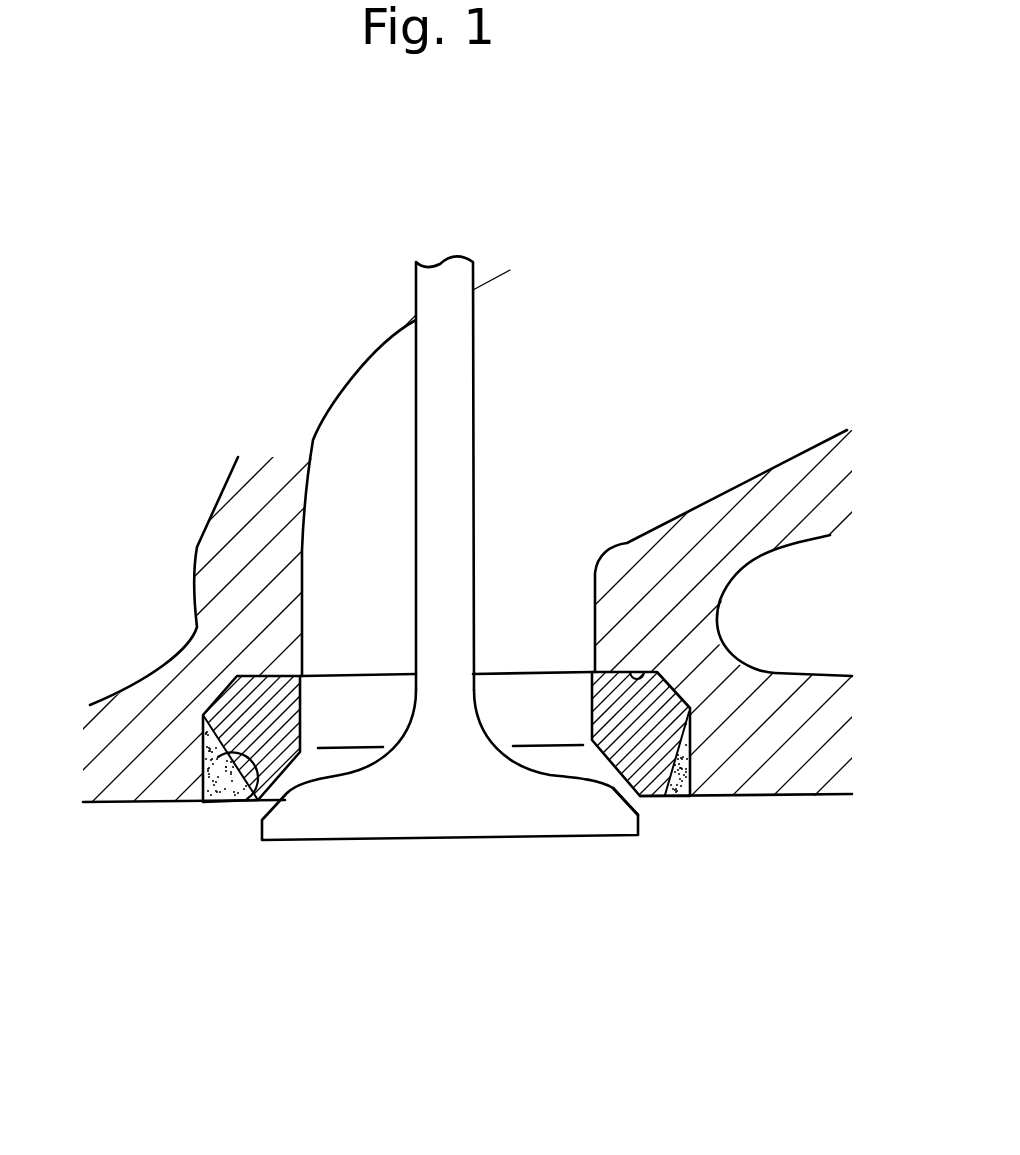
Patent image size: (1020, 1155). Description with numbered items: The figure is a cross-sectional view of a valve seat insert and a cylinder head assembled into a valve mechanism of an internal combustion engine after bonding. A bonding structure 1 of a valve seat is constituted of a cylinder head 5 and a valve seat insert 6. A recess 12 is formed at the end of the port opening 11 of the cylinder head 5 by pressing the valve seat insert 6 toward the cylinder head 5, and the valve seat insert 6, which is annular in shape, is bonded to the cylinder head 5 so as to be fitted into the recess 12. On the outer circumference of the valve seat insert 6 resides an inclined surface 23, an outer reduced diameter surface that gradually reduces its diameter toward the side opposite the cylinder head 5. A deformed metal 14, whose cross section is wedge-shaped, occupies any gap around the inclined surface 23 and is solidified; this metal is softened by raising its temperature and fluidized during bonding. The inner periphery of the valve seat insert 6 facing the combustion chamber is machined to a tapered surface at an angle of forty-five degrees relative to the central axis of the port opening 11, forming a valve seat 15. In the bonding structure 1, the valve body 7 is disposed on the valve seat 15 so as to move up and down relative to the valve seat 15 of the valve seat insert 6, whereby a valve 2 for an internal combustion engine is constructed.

The bonding structure 1 is at (108, 335).
The valve 2 is at (450, 645).
The cylinder head 5 is at (224, 487).
The valve seat insert 6 is at (253, 673).
The valve body 7 is at (473, 382).
The port opening 11 is at (595, 600).
The recess 12 is at (627, 670).
The deformed metal 14 is at (210, 802).
The valve seat 15 is at (607, 788).
The inclined surface 23 is at (242, 801).